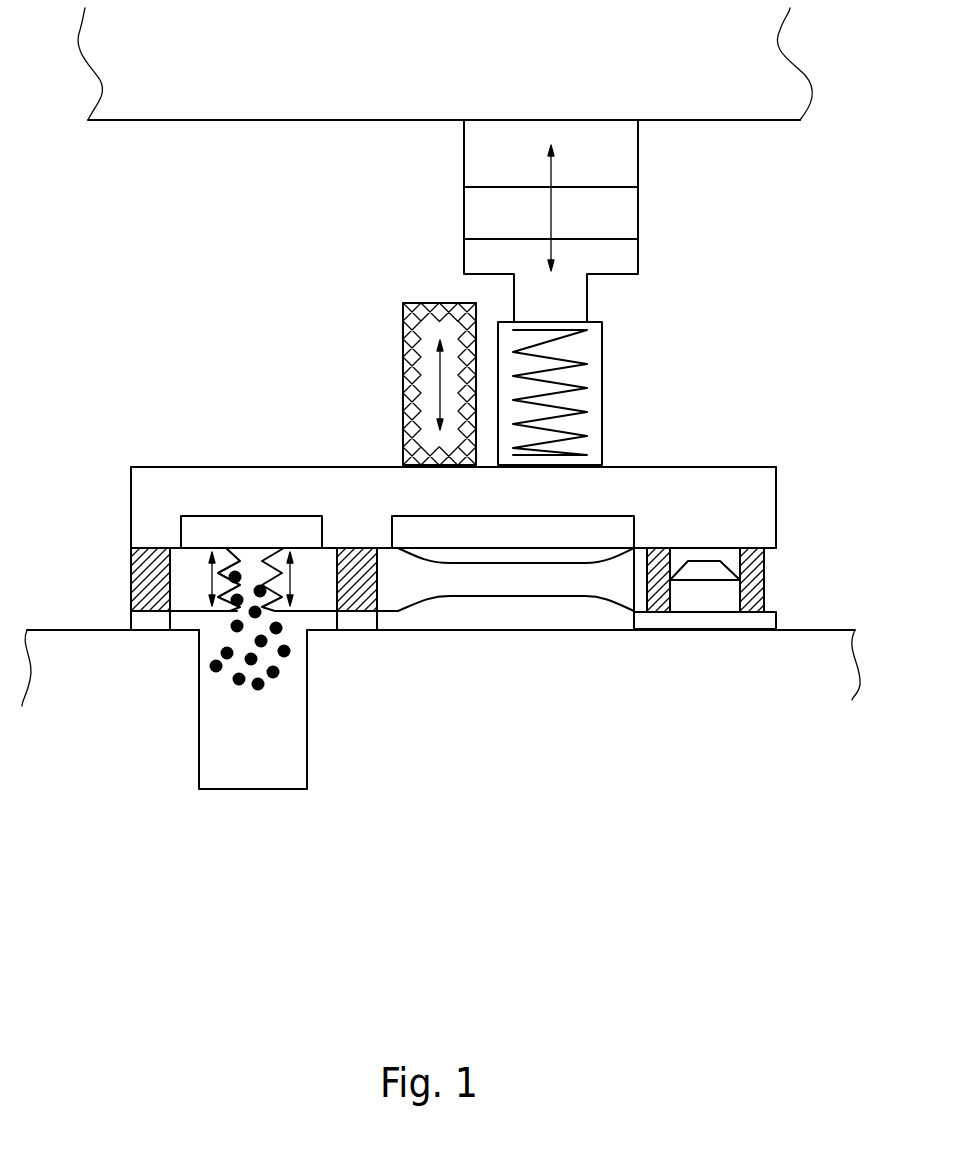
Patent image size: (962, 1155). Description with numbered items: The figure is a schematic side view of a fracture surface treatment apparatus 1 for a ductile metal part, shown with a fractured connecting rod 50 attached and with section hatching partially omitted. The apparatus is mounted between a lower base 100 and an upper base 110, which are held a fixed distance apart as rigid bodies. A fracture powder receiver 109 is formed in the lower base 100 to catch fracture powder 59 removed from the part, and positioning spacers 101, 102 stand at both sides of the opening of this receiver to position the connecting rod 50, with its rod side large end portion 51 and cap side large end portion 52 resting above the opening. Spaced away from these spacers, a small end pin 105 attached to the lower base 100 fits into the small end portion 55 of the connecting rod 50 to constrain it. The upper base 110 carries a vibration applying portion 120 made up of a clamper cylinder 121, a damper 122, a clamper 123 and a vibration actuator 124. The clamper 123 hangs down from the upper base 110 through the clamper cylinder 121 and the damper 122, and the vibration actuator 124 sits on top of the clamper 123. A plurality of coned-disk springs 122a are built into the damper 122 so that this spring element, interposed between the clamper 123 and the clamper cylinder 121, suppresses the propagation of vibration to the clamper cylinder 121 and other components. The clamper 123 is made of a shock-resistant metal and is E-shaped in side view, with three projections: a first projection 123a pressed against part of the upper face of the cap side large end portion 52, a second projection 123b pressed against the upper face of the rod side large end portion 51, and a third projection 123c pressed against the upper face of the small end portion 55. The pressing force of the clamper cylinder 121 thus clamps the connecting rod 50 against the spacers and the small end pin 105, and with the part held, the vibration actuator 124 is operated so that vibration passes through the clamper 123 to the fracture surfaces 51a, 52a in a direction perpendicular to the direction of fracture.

The fracture surface treatment apparatus 1 is at (850, 312).
The upper base 110 is at (763, 52).
The vibration applying portion 120 is at (742, 378).
The clamper cylinder 121 is at (640, 205).
The damper 122 is at (603, 405).
The coned-disk springs 122a is at (592, 357).
The clamper 123 is at (714, 467).
The first projection 123a is at (140, 525).
The second projection 123b is at (377, 512).
The third projection 123c is at (770, 525).
The vibration actuator 124 is at (404, 338).
The connecting rod 50 is at (512, 598).
The rod side large end portion 51 is at (357, 565).
The fracture surface 51a is at (260, 580).
The cap side large end portion 52 is at (140, 578).
The fracture surface 52a is at (237, 565).
The small end portion 55 is at (765, 592).
The fracture powder 59 is at (250, 703).
The lower base 100 is at (822, 672).
The positioning spacer 101 is at (358, 624).
The positioning spacer 102 is at (145, 620).
The small end pin 105 is at (708, 598).
The fracture powder receiver 109 is at (307, 727).